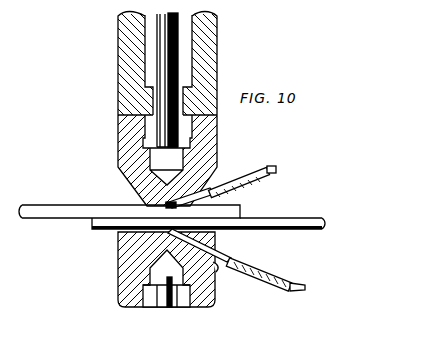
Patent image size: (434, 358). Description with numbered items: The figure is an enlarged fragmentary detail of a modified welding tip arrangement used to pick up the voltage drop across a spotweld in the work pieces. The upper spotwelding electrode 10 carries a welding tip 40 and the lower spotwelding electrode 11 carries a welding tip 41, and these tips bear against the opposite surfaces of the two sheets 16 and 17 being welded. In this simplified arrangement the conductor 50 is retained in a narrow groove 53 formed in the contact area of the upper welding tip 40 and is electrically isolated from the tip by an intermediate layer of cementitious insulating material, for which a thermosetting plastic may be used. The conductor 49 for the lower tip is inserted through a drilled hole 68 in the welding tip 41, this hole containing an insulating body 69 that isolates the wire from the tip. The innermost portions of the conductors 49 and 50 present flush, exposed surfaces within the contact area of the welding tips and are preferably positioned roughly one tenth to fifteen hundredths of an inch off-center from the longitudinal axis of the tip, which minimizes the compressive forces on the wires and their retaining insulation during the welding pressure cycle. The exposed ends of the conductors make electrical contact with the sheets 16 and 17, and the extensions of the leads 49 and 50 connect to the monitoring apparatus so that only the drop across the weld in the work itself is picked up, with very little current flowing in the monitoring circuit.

The spotwelding electrode 10 is at (118, 90).
The welding tip 40 is at (217, 142).
The narrow groove 53 is at (198, 208).
The conductor 50 is at (272, 168).
The sheet 16 is at (58, 218).
The sheet 17 is at (296, 218).
The welding tip 41 is at (118, 263).
The spotwelding electrode 11 is at (218, 302).
The insulating body 69 is at (229, 257).
The drilled hole 68 is at (213, 272).
The conductor 49 is at (305, 283).